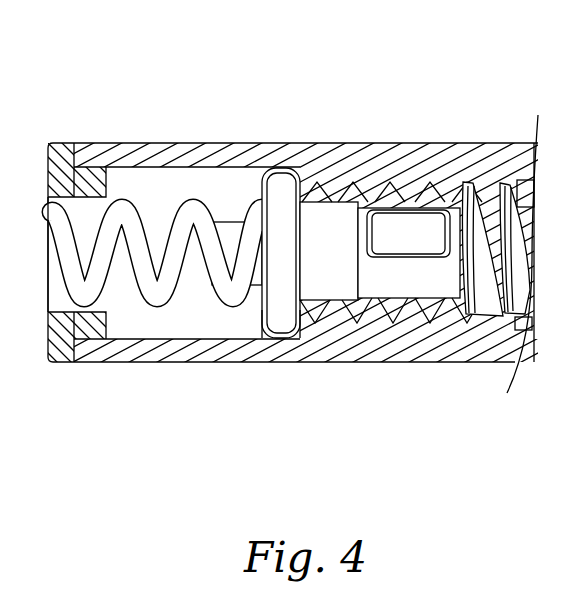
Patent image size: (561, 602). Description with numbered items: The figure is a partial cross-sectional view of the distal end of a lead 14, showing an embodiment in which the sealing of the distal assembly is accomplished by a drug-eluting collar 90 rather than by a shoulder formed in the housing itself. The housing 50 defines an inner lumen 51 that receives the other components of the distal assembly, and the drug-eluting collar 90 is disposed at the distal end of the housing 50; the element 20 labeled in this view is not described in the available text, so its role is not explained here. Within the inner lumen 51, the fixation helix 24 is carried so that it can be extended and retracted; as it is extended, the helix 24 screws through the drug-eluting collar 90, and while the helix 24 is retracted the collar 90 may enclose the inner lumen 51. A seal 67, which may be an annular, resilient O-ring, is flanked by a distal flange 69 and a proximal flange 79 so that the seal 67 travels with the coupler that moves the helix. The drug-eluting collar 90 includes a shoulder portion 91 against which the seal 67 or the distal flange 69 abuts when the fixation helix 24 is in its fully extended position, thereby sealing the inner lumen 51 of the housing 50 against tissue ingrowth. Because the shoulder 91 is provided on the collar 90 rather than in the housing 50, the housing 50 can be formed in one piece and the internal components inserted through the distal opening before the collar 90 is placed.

The lead 14 is at (443, 80).
The housing 20 is at (348, 138).
The fixation helix 24 is at (192, 222).
The housing 50 is at (388, 350).
The inner lumen 51 is at (203, 320).
The seal 67 is at (281, 330).
The distal flange 69 is at (262, 178).
The proximal flange 79 is at (299, 168).
The drug-eluting collar 90 is at (60, 366).
The shoulder portion 91 is at (108, 190).